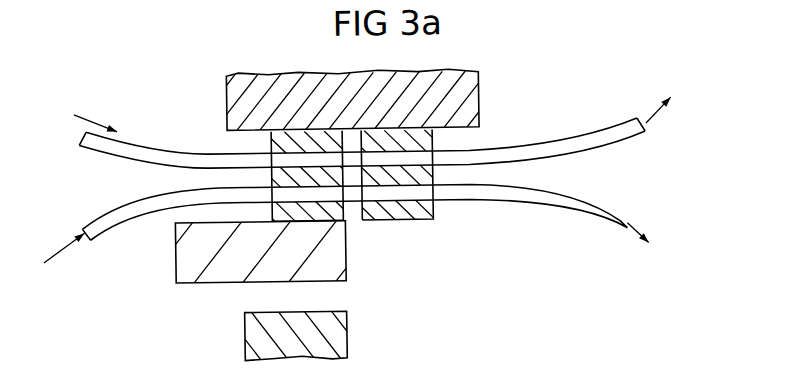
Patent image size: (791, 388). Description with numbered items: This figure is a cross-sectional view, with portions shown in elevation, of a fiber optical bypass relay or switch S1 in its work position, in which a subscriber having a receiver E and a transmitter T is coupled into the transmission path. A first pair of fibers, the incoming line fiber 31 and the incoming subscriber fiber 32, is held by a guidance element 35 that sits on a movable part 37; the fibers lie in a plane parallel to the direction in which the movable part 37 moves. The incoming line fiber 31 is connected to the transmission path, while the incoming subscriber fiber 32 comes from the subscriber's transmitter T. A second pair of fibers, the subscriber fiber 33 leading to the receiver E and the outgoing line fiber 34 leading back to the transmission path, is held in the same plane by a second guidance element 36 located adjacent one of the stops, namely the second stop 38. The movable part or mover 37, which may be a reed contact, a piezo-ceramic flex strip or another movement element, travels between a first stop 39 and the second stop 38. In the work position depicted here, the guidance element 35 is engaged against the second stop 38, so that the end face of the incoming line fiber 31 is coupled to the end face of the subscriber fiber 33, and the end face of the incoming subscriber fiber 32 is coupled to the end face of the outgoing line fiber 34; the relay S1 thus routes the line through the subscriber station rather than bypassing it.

The incoming line fiber 31 is at (106, 150).
The incoming subscriber fiber 32 is at (93, 226).
The subscriber fiber 33 is at (560, 143).
The outgoing line fiber 34 is at (593, 214).
The guidance element 35 is at (346, 206).
The guidance element 36 is at (431, 214).
The movable part 37 is at (203, 279).
The second stop 38 is at (473, 94).
The first stop 39 is at (340, 326).
The fiber optical bypass relay S1 is at (538, 84).